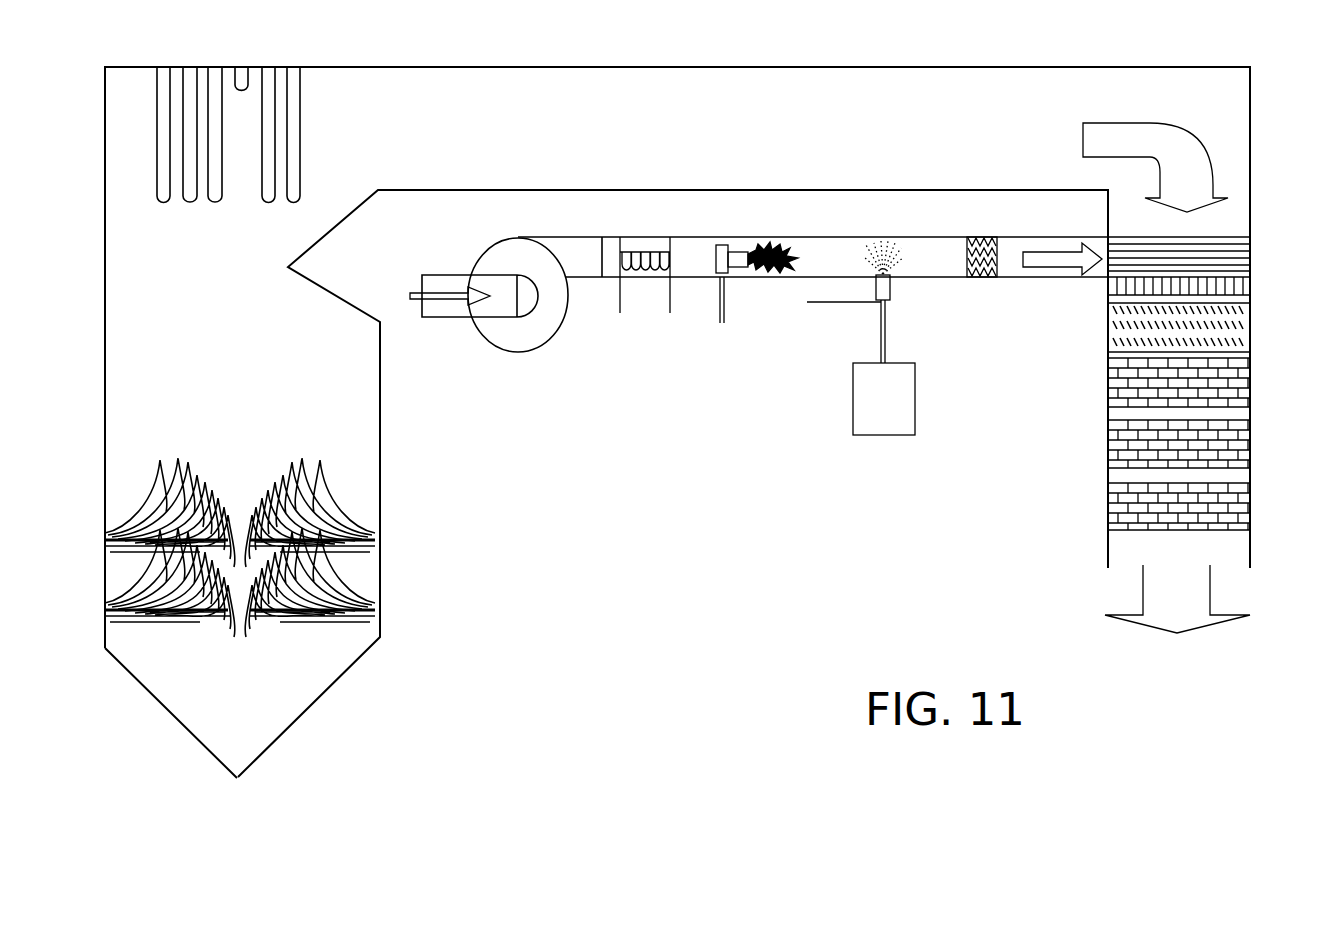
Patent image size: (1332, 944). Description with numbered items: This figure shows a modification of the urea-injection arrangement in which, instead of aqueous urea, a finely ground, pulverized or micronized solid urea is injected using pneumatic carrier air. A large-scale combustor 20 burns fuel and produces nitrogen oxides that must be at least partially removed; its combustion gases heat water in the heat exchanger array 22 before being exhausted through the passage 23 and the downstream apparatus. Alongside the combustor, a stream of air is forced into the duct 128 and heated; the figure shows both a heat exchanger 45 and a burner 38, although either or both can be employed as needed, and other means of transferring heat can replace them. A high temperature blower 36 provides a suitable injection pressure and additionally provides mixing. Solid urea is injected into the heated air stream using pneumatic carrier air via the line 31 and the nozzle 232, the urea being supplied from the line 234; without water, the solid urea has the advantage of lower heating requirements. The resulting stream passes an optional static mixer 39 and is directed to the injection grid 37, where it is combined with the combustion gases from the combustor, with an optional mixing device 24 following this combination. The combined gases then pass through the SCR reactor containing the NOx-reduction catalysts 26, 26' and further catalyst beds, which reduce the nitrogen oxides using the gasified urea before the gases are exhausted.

The combustor 20 is at (258, 458).
The heat exchanger array 22 is at (282, 172).
The passage 23 is at (738, 135).
The mixing device 24 is at (1228, 338).
The NOx-reduction catalyst 26 is at (1144, 532).
The NOx-reduction catalyst 26' is at (1136, 467).
The line 31 is at (817, 304).
The high temperature blower 36 is at (520, 248).
The injection grid 37 is at (1222, 277).
The burner 38 is at (720, 305).
The static mixer 39 is at (993, 278).
The heat exchanger 45 is at (492, 322).
The duct 128 is at (623, 243).
The nozzle 232 is at (890, 280).
The line 234 is at (880, 343).